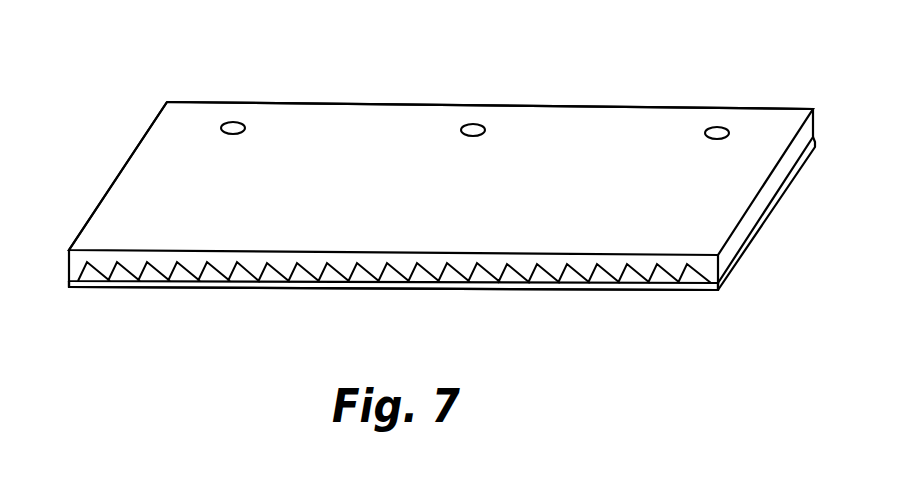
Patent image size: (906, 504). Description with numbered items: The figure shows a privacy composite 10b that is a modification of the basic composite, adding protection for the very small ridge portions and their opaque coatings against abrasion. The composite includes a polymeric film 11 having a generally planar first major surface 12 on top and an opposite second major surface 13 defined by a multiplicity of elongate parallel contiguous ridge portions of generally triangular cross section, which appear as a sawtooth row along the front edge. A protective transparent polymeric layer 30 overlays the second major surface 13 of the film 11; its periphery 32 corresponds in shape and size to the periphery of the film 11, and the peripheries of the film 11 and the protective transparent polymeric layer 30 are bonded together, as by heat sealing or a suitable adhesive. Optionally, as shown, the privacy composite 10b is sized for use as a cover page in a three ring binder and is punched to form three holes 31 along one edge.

The privacy composite 10b is at (622, 58).
The polymeric film 11 is at (378, 105).
The first major surface 12 is at (118, 208).
The second major surface 13 is at (330, 285).
The protective transparent polymeric layer 30 is at (422, 290).
The holes 31 is at (473, 128).
The periphery 32 is at (67, 281).